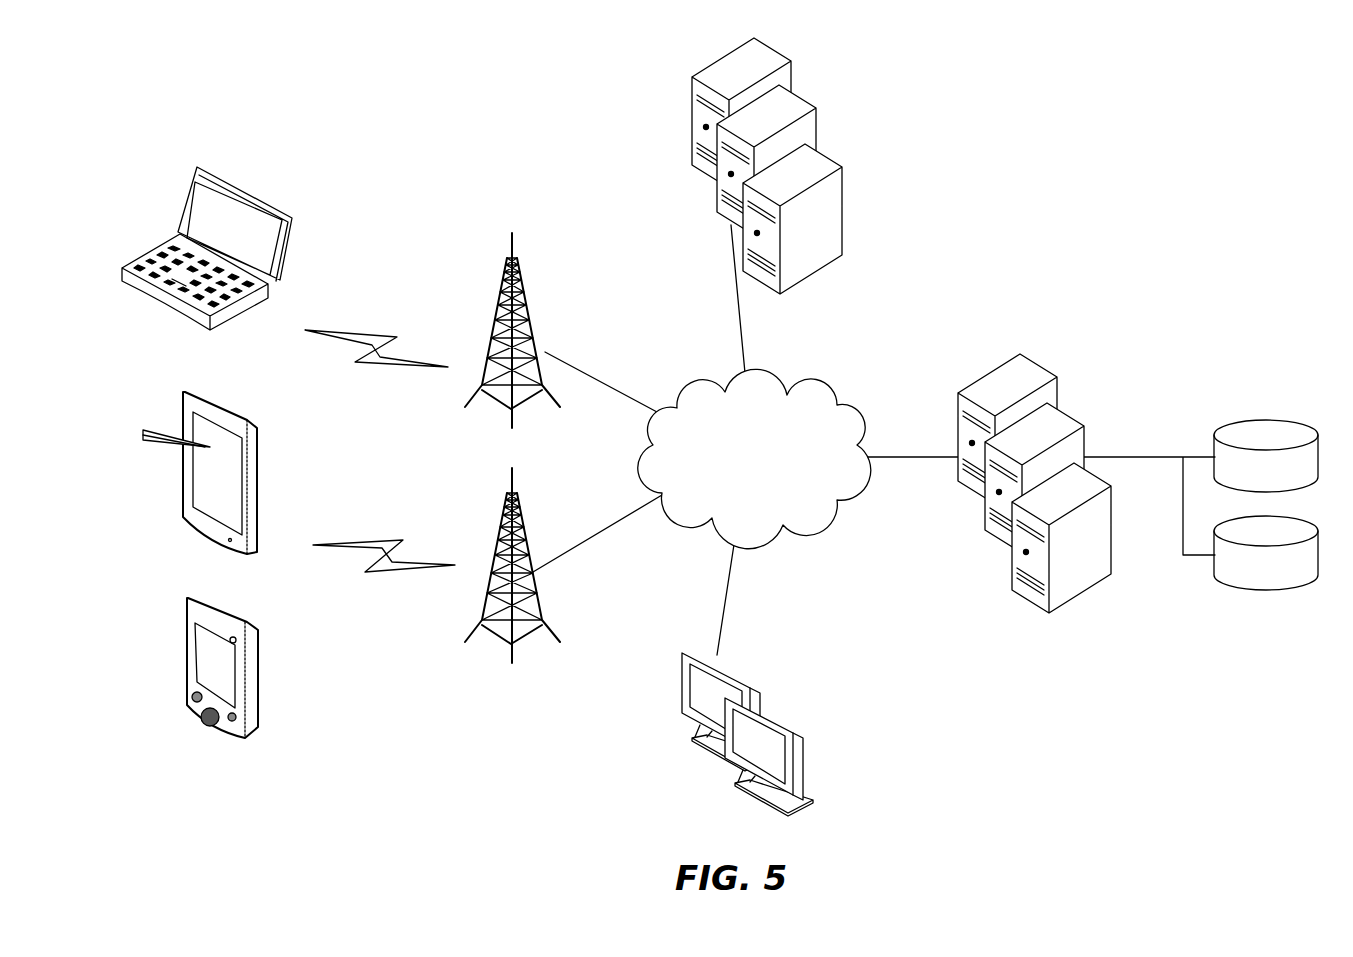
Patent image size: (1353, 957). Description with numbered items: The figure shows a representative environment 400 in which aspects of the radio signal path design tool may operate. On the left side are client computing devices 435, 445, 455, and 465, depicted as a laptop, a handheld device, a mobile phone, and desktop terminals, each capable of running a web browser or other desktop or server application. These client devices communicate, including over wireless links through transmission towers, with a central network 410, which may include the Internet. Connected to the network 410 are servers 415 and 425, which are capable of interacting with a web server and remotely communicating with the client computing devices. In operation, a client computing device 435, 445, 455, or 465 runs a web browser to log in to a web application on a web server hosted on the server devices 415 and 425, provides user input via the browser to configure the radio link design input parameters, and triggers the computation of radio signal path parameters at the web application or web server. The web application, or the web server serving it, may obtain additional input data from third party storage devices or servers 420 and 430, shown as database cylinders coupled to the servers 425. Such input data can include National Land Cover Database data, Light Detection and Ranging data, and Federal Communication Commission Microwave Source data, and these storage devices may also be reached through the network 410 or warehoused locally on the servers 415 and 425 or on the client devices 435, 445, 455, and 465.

The representative environment 400 is at (1047, 189).
The network 410 is at (813, 377).
The server 415 is at (806, 107).
The third party storage device or server 420 is at (1268, 418).
The server 425 is at (1073, 419).
The third party storage device or server 430 is at (1268, 590).
The client computing device 435 is at (190, 194).
The client computing device 445 is at (183, 403).
The client computing device 455 is at (188, 627).
The client computing device 465 is at (770, 710).